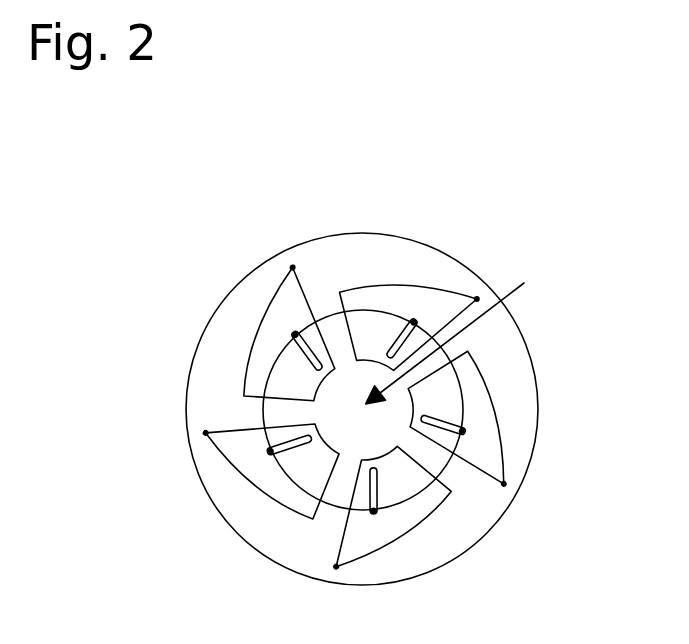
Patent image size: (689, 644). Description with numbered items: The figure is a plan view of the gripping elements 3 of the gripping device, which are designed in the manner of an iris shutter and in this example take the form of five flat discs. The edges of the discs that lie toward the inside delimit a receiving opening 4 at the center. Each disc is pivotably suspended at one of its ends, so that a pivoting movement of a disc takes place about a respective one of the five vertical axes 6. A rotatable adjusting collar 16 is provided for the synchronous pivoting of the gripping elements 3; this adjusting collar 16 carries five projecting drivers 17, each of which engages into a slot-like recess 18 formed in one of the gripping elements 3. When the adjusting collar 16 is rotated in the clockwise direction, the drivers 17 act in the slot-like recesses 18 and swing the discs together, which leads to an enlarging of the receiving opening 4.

The gripping element 3 is at (372, 283).
The receiving opening 4 is at (459, 321).
The vertical axis 6 is at (338, 563).
The adjusting collar 16 is at (262, 412).
The driver 17 is at (466, 430).
The slot-like recess 18 is at (460, 415).